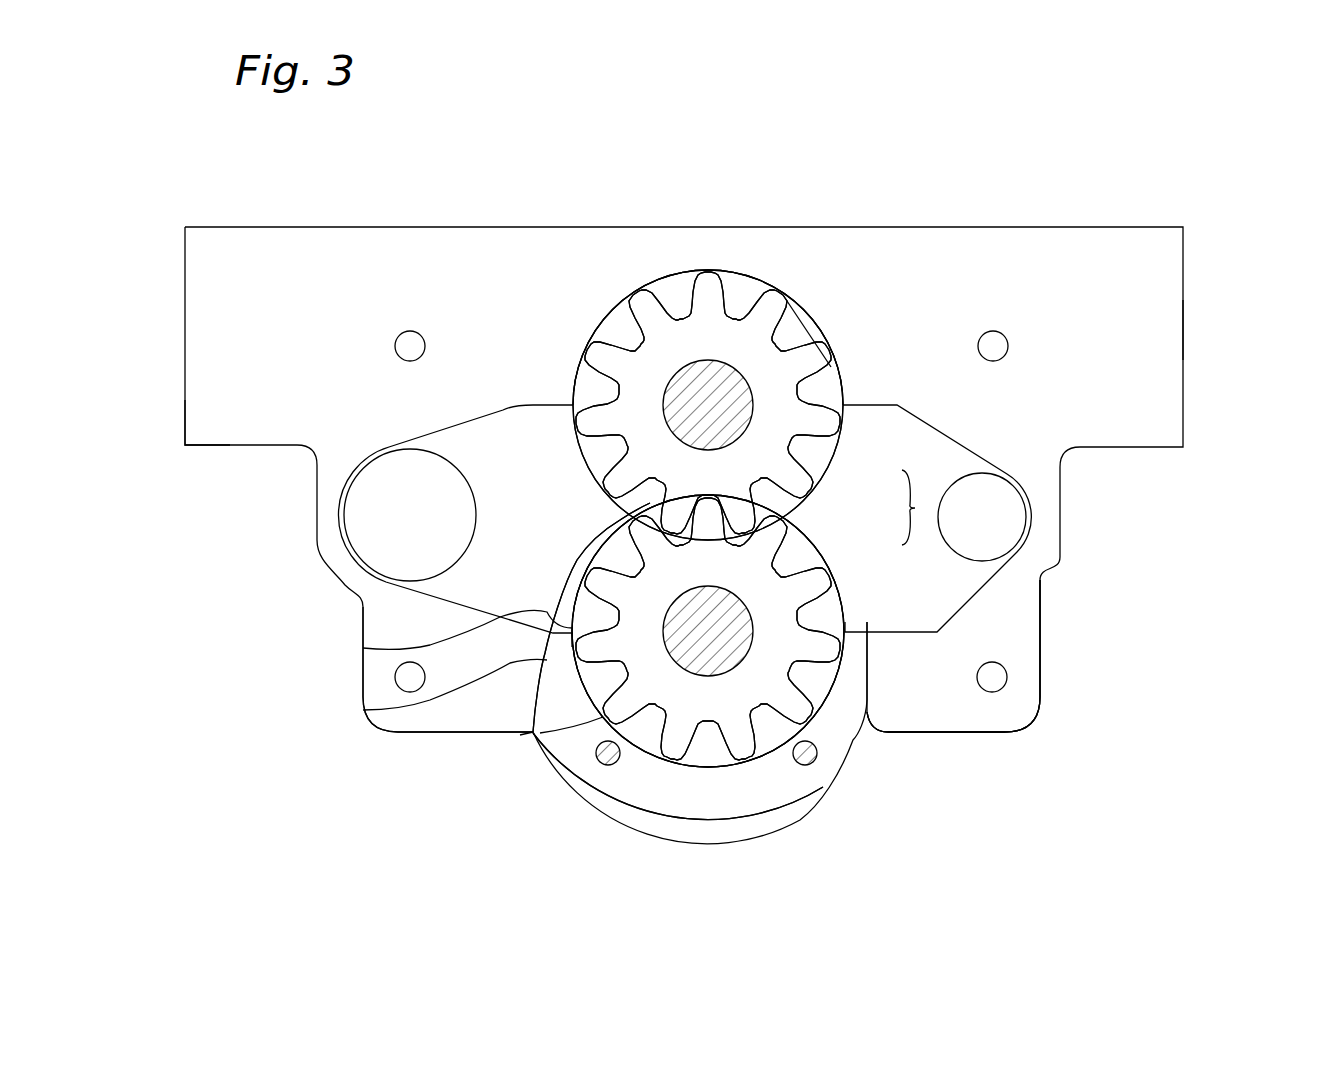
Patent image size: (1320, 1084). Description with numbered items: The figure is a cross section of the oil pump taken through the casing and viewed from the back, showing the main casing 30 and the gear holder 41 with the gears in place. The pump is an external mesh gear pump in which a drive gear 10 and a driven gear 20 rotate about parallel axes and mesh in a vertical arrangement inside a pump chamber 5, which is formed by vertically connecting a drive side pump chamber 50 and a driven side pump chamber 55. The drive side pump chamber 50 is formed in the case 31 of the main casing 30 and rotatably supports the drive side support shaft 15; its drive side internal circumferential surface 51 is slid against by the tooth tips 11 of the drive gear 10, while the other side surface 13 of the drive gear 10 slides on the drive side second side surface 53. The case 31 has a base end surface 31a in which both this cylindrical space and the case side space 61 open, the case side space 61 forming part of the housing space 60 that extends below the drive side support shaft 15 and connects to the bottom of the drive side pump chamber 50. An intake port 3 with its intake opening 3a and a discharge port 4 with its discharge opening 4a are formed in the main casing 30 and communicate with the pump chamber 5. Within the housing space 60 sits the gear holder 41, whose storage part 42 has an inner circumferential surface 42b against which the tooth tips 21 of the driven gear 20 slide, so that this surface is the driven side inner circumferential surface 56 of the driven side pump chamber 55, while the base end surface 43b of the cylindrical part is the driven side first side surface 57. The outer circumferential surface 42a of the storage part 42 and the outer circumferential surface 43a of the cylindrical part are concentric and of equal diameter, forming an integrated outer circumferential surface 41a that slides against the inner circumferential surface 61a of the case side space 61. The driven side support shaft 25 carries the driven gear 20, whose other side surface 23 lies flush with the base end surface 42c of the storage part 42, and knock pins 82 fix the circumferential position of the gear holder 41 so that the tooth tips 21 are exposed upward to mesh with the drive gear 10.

The intake port 3 is at (950, 460).
The intake opening 3a is at (1020, 510).
The discharge port 4 is at (500, 425).
The discharge opening 4a is at (365, 525).
The pump chamber 5 is at (915, 507).
The drive gear 10 is at (780, 300).
The tooth tips 11 is at (848, 405).
The other side surface 13 is at (766, 353).
The drive side support shaft 15 is at (685, 405).
The driven gear 20 is at (658, 765).
The tooth tips 21 is at (530, 735).
The other side surface 23 is at (660, 608).
The driven side support shaft 25 is at (740, 632).
The main casing 30 is at (207, 455).
The case 31 is at (1100, 225).
The base end surface 31a is at (1165, 332).
The gear holder 41 is at (736, 840).
The integrated outer circumferential surface 41a is at (285, 628).
The storage part 42 is at (697, 805).
The outer circumferential surface 42a is at (380, 710).
The inner circumferential surface 42b is at (708, 631).
The base end surface 42c is at (765, 808).
The outer circumferential surface 43a is at (380, 648).
The base end surface 43b is at (591, 617).
The drive side pump chamber 50 is at (815, 450).
The drive side internal circumferential surface 51 is at (672, 262).
The drive side second side surface 53 is at (625, 315).
The driven side pump chamber 55 is at (828, 603).
The driven side inner circumferential surface 56 is at (858, 702).
The driven side first side surface 57 is at (598, 548).
The housing space 60 is at (905, 628).
The case side space 61 is at (953, 656).
The inner circumferential surface 61a is at (880, 740).
The knock pins 82 is at (596, 765).